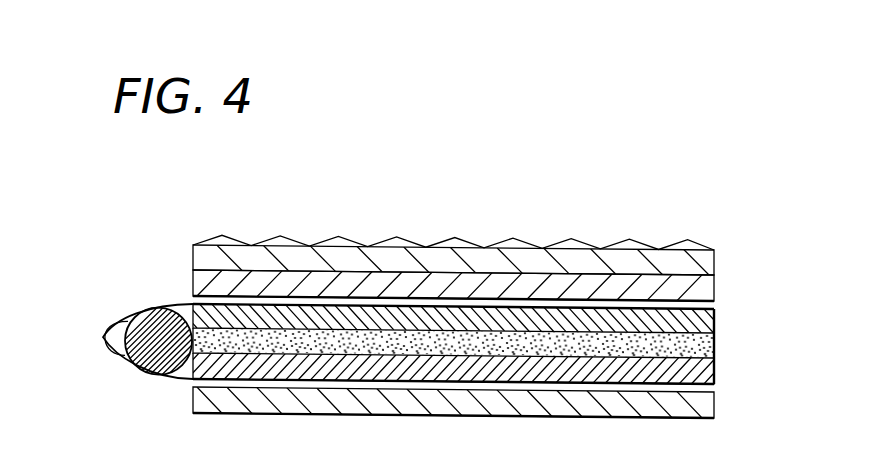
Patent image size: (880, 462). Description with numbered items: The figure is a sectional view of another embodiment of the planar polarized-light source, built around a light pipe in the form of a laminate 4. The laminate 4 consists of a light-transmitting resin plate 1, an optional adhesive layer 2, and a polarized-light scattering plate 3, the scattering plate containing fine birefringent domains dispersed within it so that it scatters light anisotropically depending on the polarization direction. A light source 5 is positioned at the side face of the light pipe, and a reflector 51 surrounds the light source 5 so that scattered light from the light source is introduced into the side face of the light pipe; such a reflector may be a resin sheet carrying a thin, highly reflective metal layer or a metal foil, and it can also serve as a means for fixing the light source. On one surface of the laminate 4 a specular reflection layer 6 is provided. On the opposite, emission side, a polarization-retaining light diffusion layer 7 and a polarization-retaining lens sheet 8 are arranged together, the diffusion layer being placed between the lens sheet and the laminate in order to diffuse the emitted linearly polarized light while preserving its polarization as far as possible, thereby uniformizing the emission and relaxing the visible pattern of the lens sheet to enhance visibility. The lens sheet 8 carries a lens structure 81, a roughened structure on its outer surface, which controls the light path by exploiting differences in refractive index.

The light-transmitting resin plate 1 is at (715, 317).
The adhesive layer 2 is at (715, 345).
The polarized-light scattering plate 3 is at (813, 295).
The laminate 4 is at (510, 343).
The light source 5 is at (124, 323).
The reflector 51 is at (109, 350).
The specular reflection layer 6 is at (707, 409).
The light diffusion layer 7 is at (707, 287).
The lens sheet 8 is at (708, 262).
The lens structure 81 is at (638, 242).